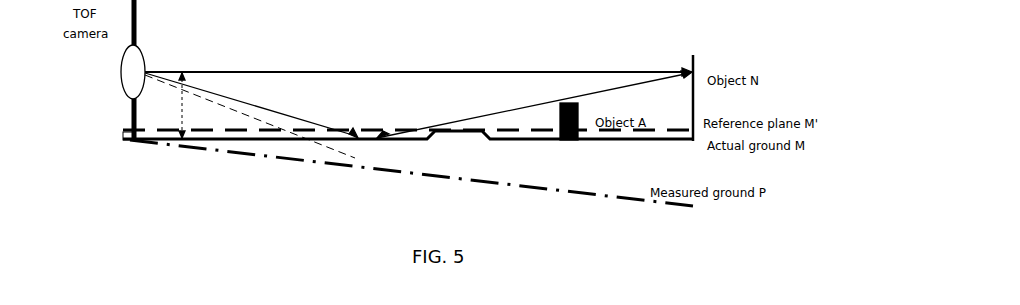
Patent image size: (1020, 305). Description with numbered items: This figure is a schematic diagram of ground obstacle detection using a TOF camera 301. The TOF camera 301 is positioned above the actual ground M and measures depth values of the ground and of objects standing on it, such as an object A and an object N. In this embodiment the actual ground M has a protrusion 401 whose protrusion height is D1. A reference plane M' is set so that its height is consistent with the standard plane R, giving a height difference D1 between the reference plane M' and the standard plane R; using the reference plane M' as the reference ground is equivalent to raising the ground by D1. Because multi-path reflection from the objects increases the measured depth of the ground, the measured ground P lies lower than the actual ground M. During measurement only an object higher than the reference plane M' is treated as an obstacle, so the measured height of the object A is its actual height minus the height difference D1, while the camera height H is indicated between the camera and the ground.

The TOF camera 301 is at (122, 77).
The protrusion 401 is at (456, 133).
The protrusion height D1 is at (122, 133).
The camera height H above ground H is at (181, 105).